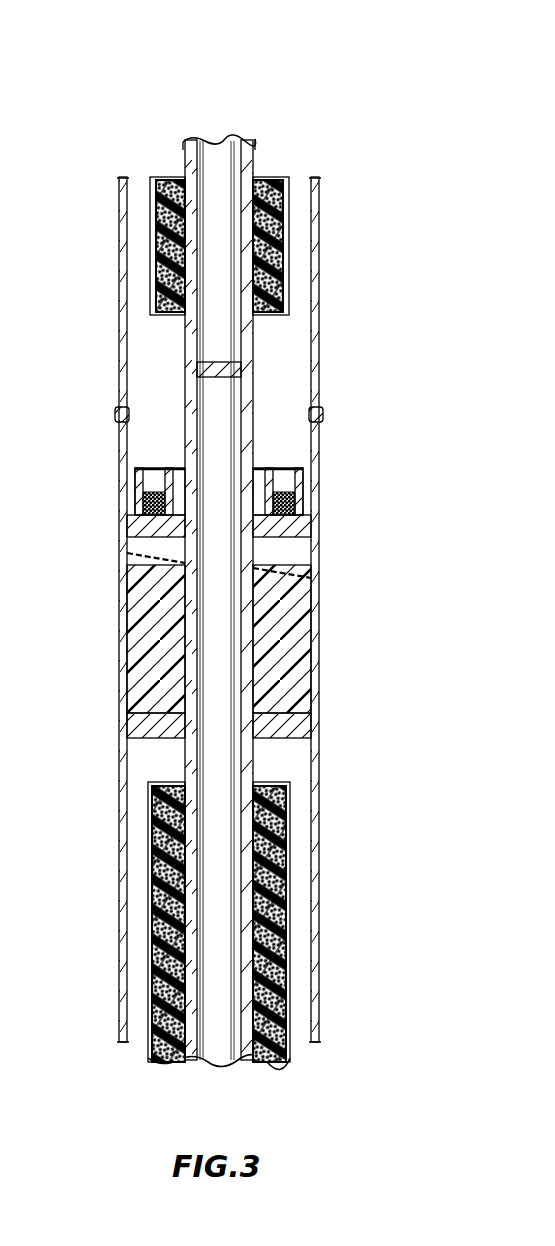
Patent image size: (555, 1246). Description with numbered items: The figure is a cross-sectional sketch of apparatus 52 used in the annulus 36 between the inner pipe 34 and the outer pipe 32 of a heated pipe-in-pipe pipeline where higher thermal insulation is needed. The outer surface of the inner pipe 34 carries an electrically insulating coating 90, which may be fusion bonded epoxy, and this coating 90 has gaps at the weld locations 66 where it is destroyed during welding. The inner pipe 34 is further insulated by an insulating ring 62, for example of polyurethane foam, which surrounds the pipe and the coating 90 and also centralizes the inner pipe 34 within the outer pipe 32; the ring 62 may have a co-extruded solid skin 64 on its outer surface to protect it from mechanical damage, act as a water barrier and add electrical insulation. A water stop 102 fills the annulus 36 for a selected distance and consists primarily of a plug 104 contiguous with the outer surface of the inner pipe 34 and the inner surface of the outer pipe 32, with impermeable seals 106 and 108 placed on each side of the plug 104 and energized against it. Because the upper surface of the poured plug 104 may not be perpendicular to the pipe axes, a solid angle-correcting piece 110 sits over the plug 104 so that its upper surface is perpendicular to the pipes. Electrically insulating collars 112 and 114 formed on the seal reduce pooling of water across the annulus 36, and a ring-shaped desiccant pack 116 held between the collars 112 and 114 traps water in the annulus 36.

The annulus apparatus 52 is at (118, 83).
The outer pipe 32 is at (322, 983).
The inner pipe 34 is at (237, 892).
The annulus 36 is at (302, 802).
The insulating ring 62 is at (282, 238).
The co-extruded solid skin 64 is at (295, 267).
The weld locations 66 is at (246, 368).
The electrically insulating coating 90 is at (258, 147).
The water stop 102 is at (276, 576).
The plug 104 is at (282, 635).
The impermeable seal 106 is at (150, 718).
The impermeable seal 108 is at (137, 532).
The solid angle-correcting piece 110 is at (280, 556).
The electrically insulating collar 112 is at (305, 470).
The electrically insulating collar 114 is at (300, 490).
The desiccant pack 116 is at (150, 500).